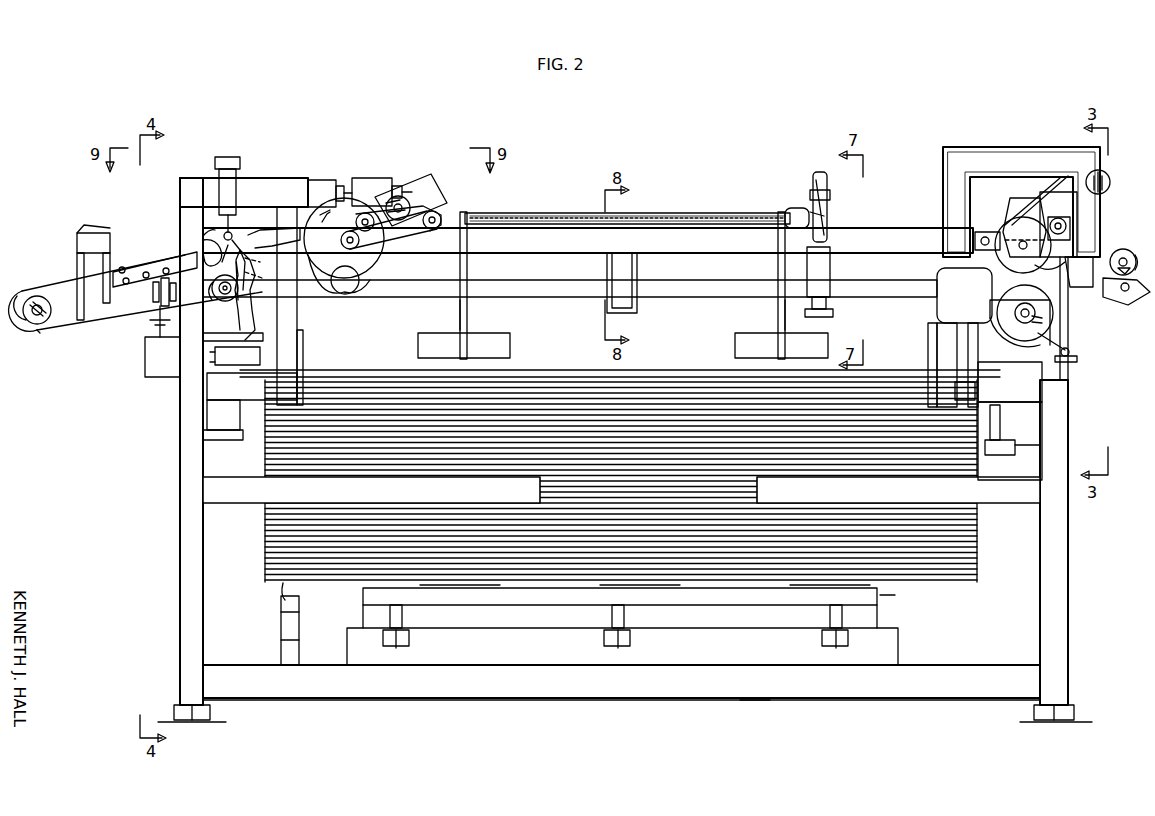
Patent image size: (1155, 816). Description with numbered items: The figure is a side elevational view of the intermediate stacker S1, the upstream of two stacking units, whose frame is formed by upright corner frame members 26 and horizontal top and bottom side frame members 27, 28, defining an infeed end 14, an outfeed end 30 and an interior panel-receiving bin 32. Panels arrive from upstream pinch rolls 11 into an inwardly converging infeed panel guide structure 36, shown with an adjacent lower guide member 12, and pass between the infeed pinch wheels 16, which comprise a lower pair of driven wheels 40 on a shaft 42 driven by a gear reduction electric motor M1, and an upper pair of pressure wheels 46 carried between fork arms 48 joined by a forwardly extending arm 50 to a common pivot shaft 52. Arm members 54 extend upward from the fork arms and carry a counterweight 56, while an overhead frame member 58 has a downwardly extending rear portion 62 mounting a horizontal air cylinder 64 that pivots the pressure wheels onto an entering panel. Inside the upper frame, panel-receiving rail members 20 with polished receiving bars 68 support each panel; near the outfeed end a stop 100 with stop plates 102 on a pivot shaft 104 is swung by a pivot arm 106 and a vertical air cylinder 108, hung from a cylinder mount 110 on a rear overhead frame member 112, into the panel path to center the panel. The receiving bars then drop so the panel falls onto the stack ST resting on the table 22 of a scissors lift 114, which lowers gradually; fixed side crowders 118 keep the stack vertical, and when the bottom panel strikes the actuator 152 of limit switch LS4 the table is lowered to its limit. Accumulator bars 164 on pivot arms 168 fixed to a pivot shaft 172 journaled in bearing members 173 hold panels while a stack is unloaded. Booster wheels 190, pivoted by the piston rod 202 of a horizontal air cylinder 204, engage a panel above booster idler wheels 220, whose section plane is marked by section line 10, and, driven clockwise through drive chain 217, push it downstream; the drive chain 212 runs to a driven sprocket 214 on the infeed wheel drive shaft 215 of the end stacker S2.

The upright corner frame member 26 is at (181, 536).
The horizontal bottom side frame member 28 is at (858, 699).
The horizontal top side frame member 27 is at (908, 230).
The receiving bar 68 is at (577, 298).
The stack ST is at (265, 538).
The table 22 is at (892, 598).
The scissors lift 114 is at (900, 645).
The panel-receiving bin 32 is at (946, 619).
The intermediate stacker S1 is at (758, 712).
The actuator 152 is at (280, 588).
The limit switch LS4 is at (285, 612).
The fixed side crowder 118 is at (291, 345).
The infeed wheel drive shaft 215 is at (36, 296).
The drive chain 212 is at (114, 316).
The driven sprocket 214 is at (66, 320).
The end stacker S2 is at (48, 334).
The outfeed end 30 is at (181, 236).
The vertical air cylinder 108 is at (236, 200).
The cylinder mount 110 is at (240, 158).
The rear overhead frame member 112 is at (315, 180).
The horizontal air cylinder 204 is at (362, 170).
The piston rod 202 is at (398, 185).
The section line 10 is at (358, 258).
The booster wheel 190 is at (340, 296).
The booster idler wheel 220 is at (358, 296).
The drive chain 217 is at (388, 255).
The pivot shaft 104 is at (248, 240).
The pivot arm 106 is at (190, 243).
The stop 100 is at (230, 296).
The stop plate 102 is at (250, 296).
The pivot shaft 172 is at (675, 202).
The bearing member 173 is at (466, 213).
The pivot arm 168 is at (466, 263).
The accumulator bar 164 is at (490, 333).
The panel-receiving rail member 20 is at (708, 305).
The overhead frame member 58 is at (1028, 147).
The downwardly extending rear portion 62 is at (943, 196).
The arm member 54 is at (1070, 180).
The counterweight 56 is at (1110, 184).
The infeed pinch wheels 16 is at (1010, 218).
The horizontal air cylinder 64 is at (998, 236).
The fork arm 48 is at (1030, 245).
The forwardly extending arm 50 is at (1056, 218).
The pivot shaft 52 is at (1066, 226).
The pressure wheel 46 is at (1060, 278).
The infeed panel guide structure 36 is at (1103, 257).
The pinch rolls 11 is at (1144, 262).
The plate 12 is at (1124, 300).
The infeed end 14 is at (1093, 318).
The shaft 42 is at (1030, 315).
The driven wheel 40 is at (1010, 345).
The gear reduction electric motor M1 is at (964, 337).